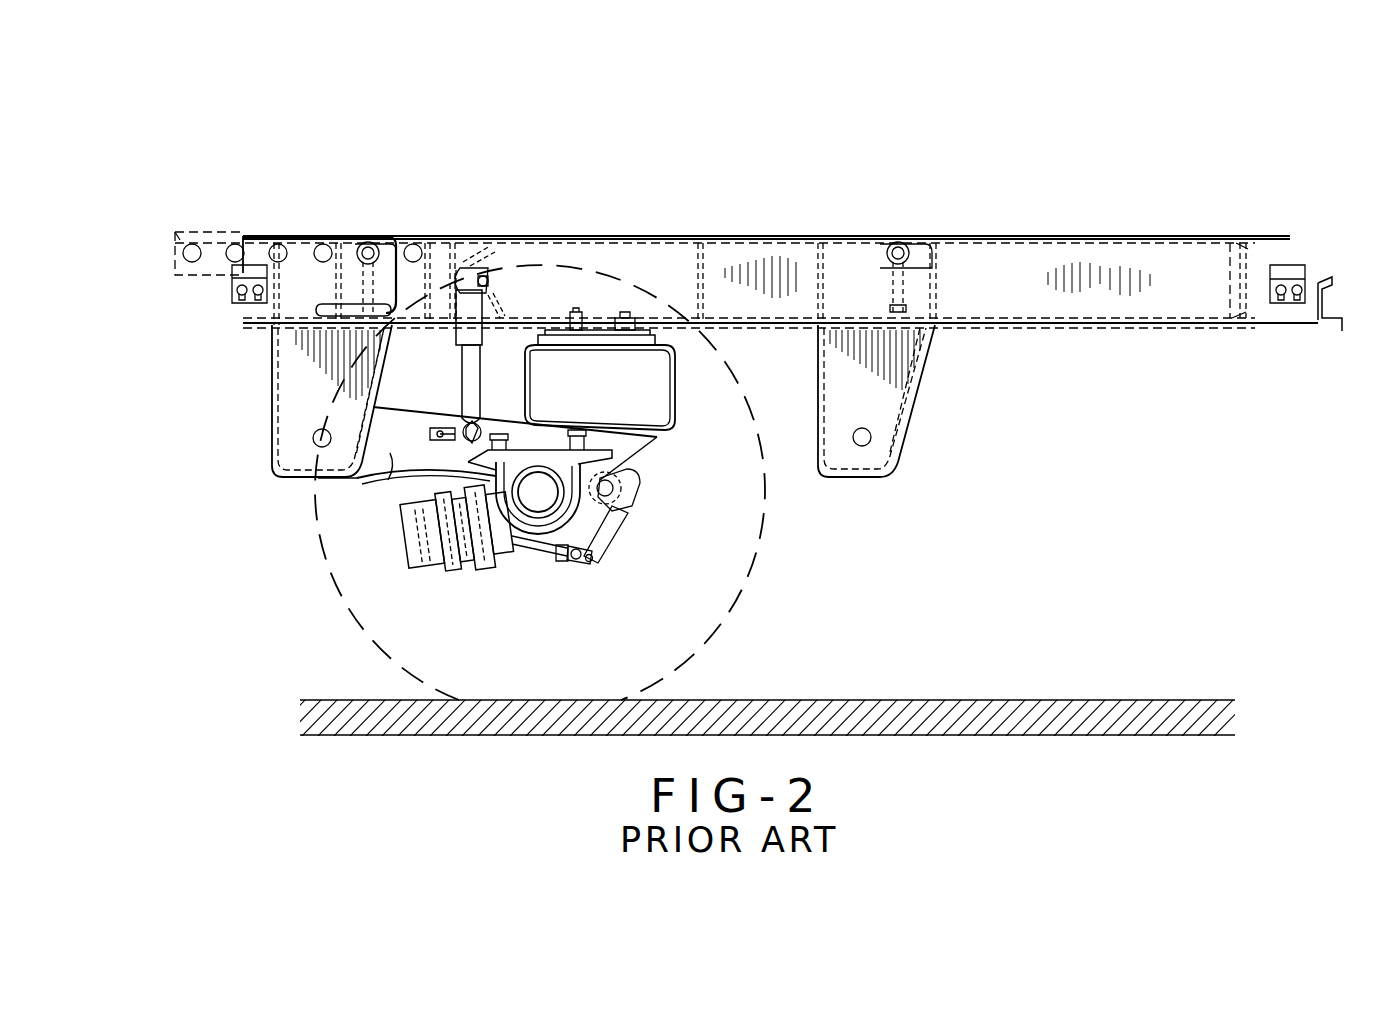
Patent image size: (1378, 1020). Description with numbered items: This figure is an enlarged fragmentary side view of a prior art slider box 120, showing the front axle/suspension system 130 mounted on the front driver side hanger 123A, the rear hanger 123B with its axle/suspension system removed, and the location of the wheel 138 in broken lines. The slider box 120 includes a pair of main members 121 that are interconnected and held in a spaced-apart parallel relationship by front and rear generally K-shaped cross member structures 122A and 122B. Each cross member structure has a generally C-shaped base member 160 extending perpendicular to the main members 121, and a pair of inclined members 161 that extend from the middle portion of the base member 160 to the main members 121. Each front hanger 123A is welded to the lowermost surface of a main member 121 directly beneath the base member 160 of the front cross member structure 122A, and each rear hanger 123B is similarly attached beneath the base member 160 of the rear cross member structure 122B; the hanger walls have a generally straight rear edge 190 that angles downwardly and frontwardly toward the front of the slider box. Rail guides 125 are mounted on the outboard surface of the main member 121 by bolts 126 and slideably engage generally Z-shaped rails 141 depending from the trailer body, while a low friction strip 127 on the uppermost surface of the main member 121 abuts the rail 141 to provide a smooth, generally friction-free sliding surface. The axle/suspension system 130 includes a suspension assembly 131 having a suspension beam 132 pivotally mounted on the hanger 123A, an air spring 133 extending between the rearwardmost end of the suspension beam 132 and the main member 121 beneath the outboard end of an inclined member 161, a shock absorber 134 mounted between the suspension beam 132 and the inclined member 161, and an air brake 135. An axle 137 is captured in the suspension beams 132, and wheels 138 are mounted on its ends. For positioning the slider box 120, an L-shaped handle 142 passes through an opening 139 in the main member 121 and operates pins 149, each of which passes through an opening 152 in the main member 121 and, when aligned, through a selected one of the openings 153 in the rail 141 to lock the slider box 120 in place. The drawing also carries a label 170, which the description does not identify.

The slider box 120 is at (1105, 190).
The main member 121 is at (1128, 322).
The front K-shaped cross member structure 122A is at (712, 280).
The rear K-shaped cross member structure 122B is at (1248, 300).
The front hanger 123A is at (272, 419).
The rear hanger 123B is at (920, 411).
The rail guide 125 is at (250, 300).
The bolt 126 is at (240, 283).
The low friction strip 127 is at (620, 240).
The front axle/suspension system 130 is at (648, 456).
The suspension assembly 131 is at (362, 473).
The suspension beam 132 is at (376, 458).
The air spring 133 is at (625, 390).
The shock absorber 134 is at (470, 386).
The air brake 135 is at (418, 540).
The axle 137 is at (534, 529).
The wheel 138 is at (748, 585).
The opening 139 is at (398, 243).
The Z-shaped rail 141 is at (215, 235).
The L-shaped handle 142 is at (345, 312).
The pin 149 is at (364, 250).
The opening 152 is at (364, 245).
The opening 153 is at (190, 245).
The base member 160 is at (470, 245).
The inclined member 161 is at (1252, 245).
The hole 170 is at (290, 248).
The rear edge 190 is at (378, 372).